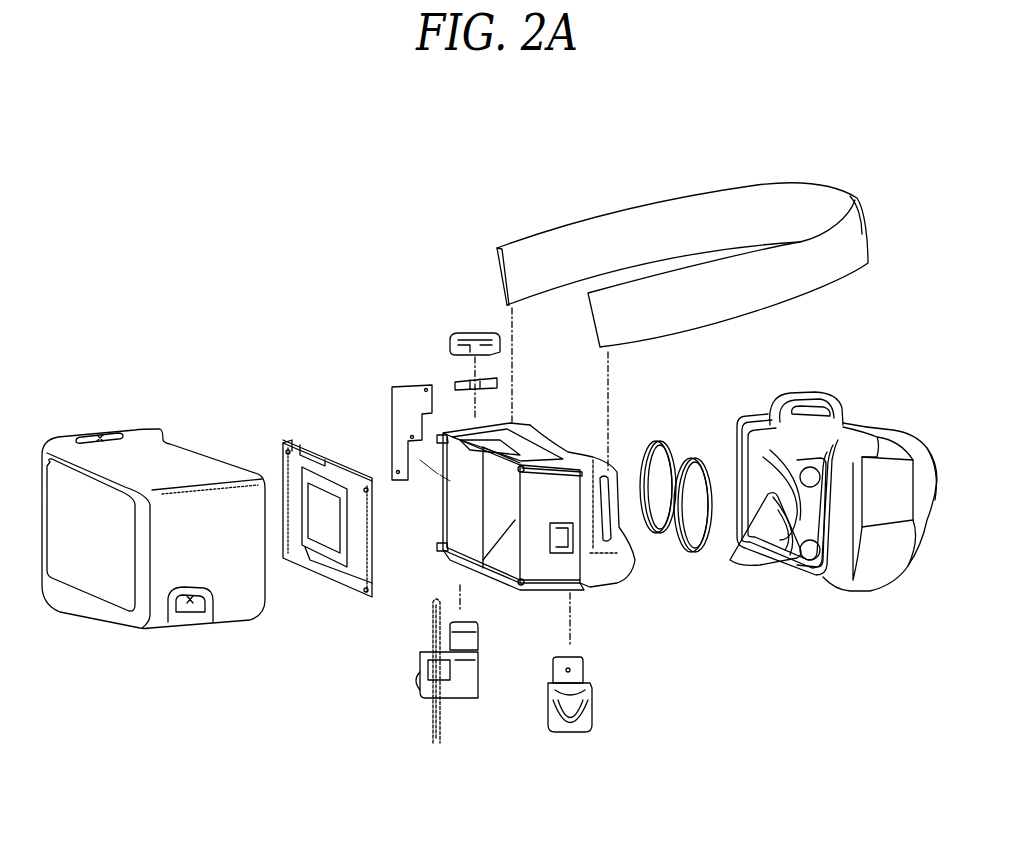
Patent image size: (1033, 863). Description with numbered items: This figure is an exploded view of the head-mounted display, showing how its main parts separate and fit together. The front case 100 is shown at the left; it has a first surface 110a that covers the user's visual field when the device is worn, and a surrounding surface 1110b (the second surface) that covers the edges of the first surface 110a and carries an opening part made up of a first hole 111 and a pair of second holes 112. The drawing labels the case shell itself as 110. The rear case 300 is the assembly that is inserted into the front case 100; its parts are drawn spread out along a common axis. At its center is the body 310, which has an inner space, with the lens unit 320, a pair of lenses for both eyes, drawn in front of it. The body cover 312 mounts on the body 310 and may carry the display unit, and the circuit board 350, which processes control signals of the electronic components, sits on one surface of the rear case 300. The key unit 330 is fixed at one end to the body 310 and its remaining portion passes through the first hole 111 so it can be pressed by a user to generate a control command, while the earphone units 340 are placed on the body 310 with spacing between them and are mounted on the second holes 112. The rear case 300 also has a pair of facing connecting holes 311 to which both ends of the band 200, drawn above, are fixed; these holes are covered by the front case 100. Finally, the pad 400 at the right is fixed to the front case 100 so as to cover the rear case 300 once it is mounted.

The front case 100 is at (167, 555).
The cover 110 is at (167, 540).
The first surface 110a is at (92, 583).
The first hole 111 is at (103, 434).
The side face of cover 1110b is at (220, 507).
The second hole 112 is at (190, 640).
The band 200 is at (635, 198).
The rear case 300 is at (497, 555).
The body 310 is at (535, 589).
The connecting hole 311 is at (634, 562).
The body cover 312 is at (337, 578).
The lens unit 320 is at (668, 440).
The key unit 330 is at (468, 330).
The earphone unit 340 is at (572, 743).
The circuit board 350 is at (393, 382).
The pad 400 is at (845, 597).